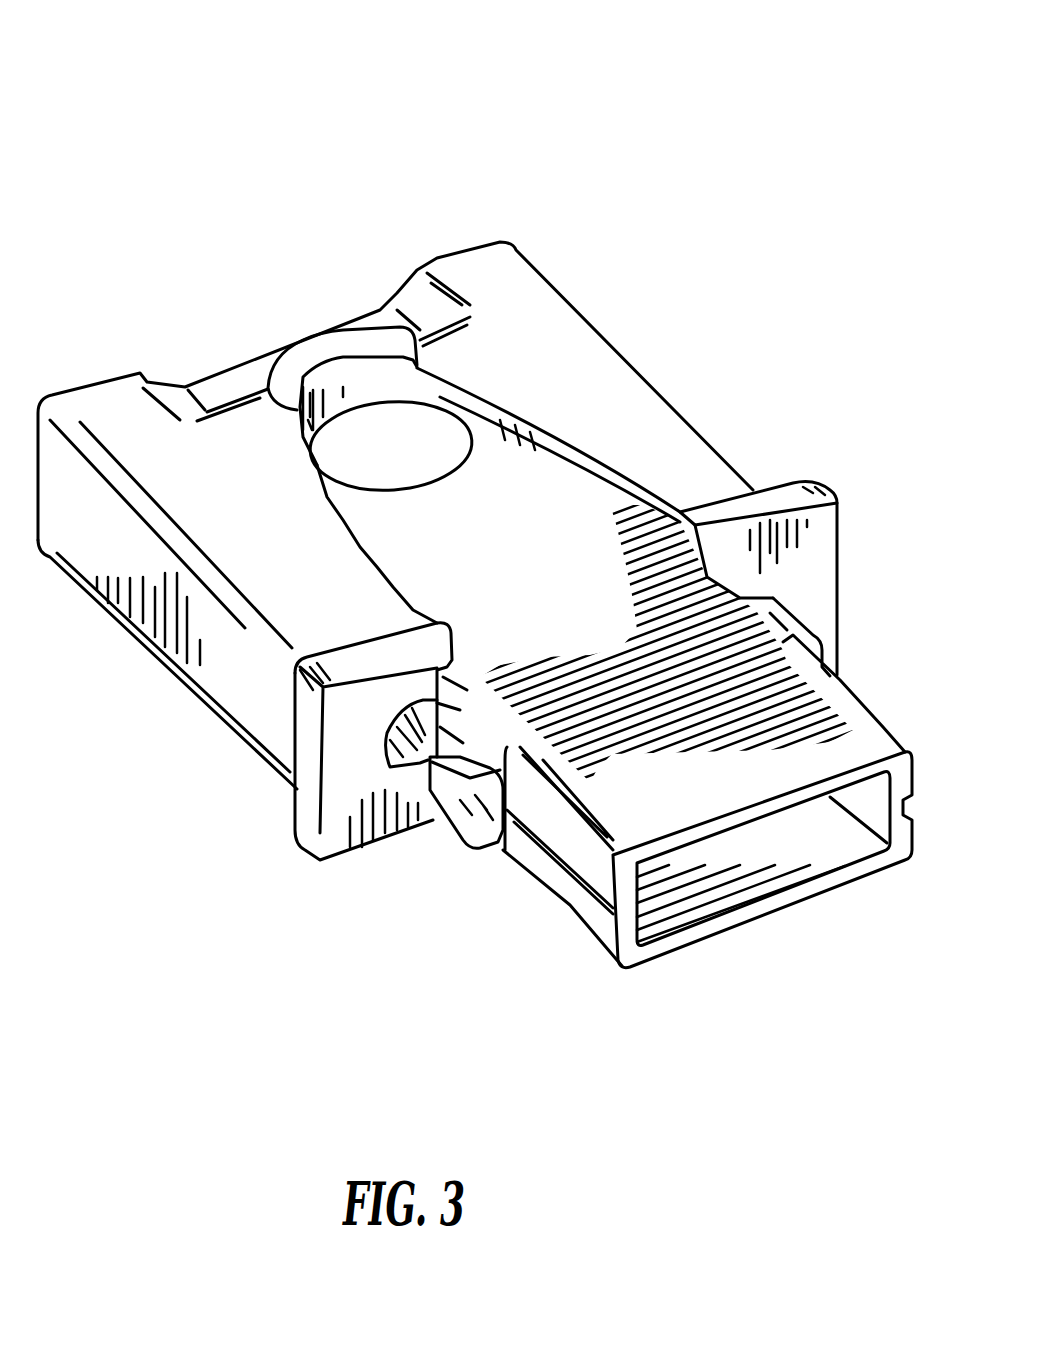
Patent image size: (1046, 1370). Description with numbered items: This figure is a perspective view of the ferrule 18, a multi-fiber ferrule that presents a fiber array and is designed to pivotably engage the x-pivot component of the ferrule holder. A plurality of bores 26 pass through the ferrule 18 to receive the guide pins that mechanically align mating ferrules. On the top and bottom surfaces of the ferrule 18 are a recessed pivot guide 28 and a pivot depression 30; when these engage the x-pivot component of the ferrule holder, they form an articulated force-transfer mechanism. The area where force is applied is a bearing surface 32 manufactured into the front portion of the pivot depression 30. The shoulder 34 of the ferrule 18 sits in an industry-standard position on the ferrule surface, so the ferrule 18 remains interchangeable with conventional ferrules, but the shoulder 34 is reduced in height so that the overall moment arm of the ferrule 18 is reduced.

The ferrule 18 is at (500, 167).
The bores 26 is at (430, 832).
The recessed pivot guide 28 is at (530, 480).
The pivot depression 30 is at (350, 466).
The bearing surface 32 is at (345, 353).
The shoulder 34 is at (845, 488).